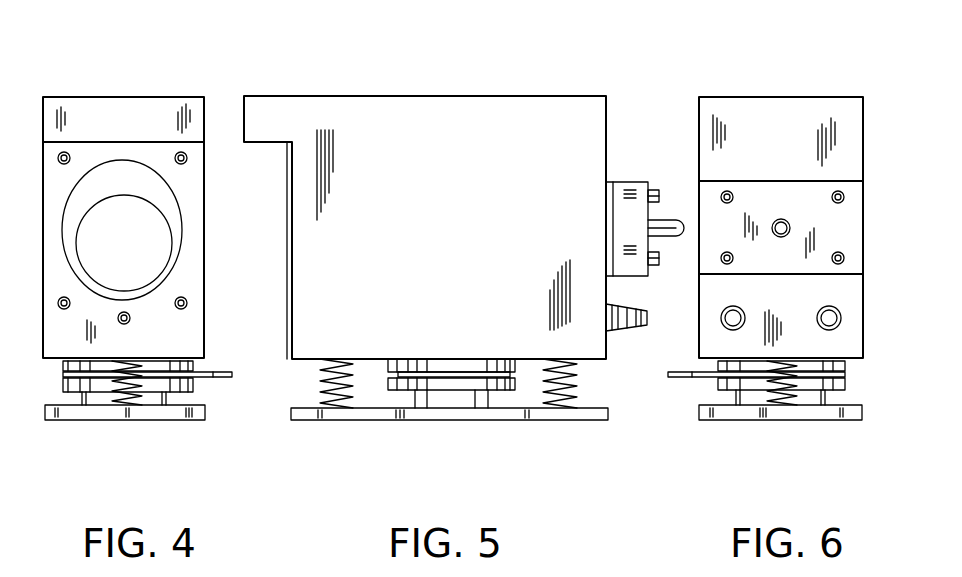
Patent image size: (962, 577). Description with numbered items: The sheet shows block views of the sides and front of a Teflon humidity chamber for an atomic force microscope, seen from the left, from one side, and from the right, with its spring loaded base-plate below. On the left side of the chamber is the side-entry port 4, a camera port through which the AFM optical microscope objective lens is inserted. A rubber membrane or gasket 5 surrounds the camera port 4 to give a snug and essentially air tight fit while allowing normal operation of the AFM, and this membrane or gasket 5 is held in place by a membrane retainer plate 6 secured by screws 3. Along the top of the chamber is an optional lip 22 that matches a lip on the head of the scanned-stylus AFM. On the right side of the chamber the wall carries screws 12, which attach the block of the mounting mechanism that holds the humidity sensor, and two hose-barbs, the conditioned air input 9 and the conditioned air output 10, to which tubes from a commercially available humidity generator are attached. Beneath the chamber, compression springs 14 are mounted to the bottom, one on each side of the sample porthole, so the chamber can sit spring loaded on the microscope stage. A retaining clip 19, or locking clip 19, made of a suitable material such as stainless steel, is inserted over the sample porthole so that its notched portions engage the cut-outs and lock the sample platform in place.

In FIG. 4, the screws 3 is at (187, 162).
In FIG. 4, the side-entry port 4 is at (92, 253).
In FIG. 4, the rubber membrane or gasket 5 is at (173, 262).
In FIG. 4, the membrane retainer plate 6 is at (70, 330).
In FIG. 6, the conditioned air input 9 is at (735, 330).
In FIG. 6, the conditioned air output 10 is at (831, 330).
In FIG. 6, the screws 12 is at (838, 191).
In FIG. 5, the compression springs 14 is at (323, 390).
In FIG. 4, the retaining clip 19 is at (222, 378).
In FIG. 4, the lip 22 is at (132, 115).